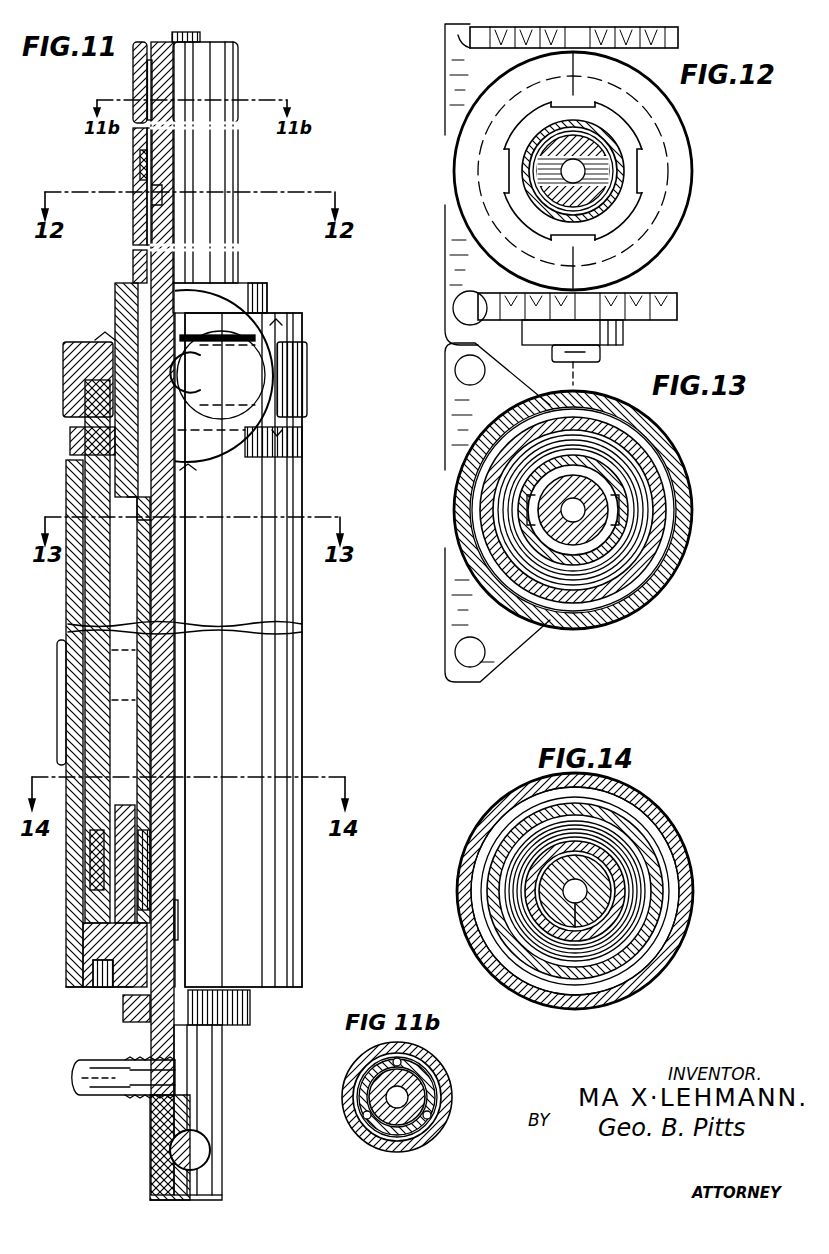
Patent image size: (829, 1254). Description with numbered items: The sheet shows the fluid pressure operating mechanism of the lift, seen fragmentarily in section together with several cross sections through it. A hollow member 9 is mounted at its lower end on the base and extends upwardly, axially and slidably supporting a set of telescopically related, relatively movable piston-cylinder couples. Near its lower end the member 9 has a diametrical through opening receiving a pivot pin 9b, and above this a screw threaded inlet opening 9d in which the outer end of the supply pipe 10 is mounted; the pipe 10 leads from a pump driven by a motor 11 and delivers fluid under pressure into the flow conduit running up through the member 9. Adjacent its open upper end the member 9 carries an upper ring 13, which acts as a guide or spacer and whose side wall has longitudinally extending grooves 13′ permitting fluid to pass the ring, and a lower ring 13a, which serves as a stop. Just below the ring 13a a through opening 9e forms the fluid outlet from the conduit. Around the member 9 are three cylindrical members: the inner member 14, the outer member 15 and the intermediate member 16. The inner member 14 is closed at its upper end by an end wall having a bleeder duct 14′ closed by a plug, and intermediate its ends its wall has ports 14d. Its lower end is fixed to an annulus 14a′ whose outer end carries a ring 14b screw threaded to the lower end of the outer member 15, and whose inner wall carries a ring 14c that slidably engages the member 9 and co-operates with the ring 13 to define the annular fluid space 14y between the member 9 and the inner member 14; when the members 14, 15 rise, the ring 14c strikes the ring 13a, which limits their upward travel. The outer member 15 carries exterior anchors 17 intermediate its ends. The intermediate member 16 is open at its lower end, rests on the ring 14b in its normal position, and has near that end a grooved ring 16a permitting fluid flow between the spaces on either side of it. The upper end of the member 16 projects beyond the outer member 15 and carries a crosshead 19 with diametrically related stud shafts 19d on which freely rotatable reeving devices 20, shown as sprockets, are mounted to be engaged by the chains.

In FIG. 11, the member 9 is at (165, 945).
In FIG. 12, the member 9 is at (574, 221).
In FIG. 13, the member 9 is at (540, 512).
In FIG. 14, the member 9 is at (610, 890).
In FIG. 11B, the member 9 is at (420, 1097).
In FIG. 11, the pivot pin 9b is at (195, 1155).
In FIG. 11, the screw threaded inlet opening 9d is at (150, 1116).
In FIG. 11, the through opening 9e is at (152, 205).
In FIG. 12, the through opening 9e is at (603, 177).
In FIG. 11, the supply pipe 10 is at (97, 1070).
In FIG. 12, the motor 11 is at (587, 219).
In FIG. 11, the upper ring 13 is at (133, 125).
In FIG. 11B, the upper ring 13 is at (420, 1130).
In FIG. 11B, the grooves 13′ is at (435, 1075).
In FIG. 11, the lower ring 13a is at (140, 172).
In FIG. 11, the inner cylindrical member 14 is at (140, 752).
In FIG. 13, the inner cylindrical member 14 is at (583, 555).
In FIG. 14, the inner cylindrical member 14 is at (615, 865).
In FIG. 11B, the inner cylindrical member 14 is at (360, 1130).
In FIG. 11, the bleeder duct 14′ is at (133, 68).
In FIG. 11, the annulus 14a′ is at (140, 832).
In FIG. 11, the ring 14b is at (95, 985).
In FIG. 11, the ring 14c is at (150, 878).
In FIG. 11, the ports 14d is at (147, 518).
In FIG. 13, the ports 14d is at (630, 515).
In FIG. 11, the annular fluid space 14y is at (148, 578).
In FIG. 11, the outer cylindrical member 15 is at (70, 860).
In FIG. 13, the outer cylindrical member 15 is at (675, 440).
In FIG. 14, the outer cylindrical member 15 is at (500, 812).
In FIG. 11, the intermediate cylindrical member 16 is at (95, 688).
In FIG. 13, the intermediate cylindrical member 16 is at (655, 568).
In FIG. 14, the intermediate cylindrical member 16 is at (492, 918).
In FIG. 11, the ring 16a is at (90, 898).
In FIG. 12, the anchors 17 is at (452, 265).
In FIG. 13, the anchors 17 is at (450, 385).
In FIG. 11, the crosshead 19 is at (305, 390).
In FIG. 12, the stud shafts 19d is at (600, 352).
In FIG. 11, the reeving devices 20 is at (265, 330).
In FIG. 12, the reeving devices 20 is at (630, 318).